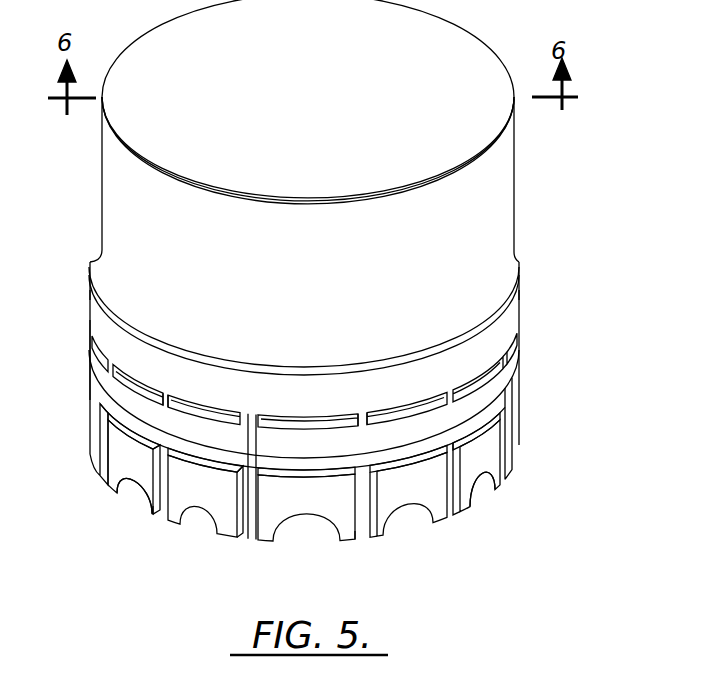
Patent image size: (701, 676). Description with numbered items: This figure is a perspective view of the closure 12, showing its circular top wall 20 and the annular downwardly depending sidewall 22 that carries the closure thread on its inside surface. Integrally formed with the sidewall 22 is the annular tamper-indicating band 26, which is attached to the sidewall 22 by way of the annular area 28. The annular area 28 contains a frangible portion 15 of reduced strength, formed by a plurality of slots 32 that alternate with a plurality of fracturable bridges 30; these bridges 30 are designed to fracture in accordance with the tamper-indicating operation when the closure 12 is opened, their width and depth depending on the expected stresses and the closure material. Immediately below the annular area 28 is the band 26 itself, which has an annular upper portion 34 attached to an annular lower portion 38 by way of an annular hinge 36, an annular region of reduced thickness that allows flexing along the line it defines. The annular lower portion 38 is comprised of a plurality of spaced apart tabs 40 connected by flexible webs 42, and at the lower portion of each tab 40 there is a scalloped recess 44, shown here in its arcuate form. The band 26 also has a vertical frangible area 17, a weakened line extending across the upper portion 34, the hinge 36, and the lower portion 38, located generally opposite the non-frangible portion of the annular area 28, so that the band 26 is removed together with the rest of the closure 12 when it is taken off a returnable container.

The closure 12 is at (572, 147).
The top wall 20 is at (323, 97).
The annular sidewall 22 is at (487, 243).
The annular area 28 is at (543, 318).
The annular tamper-indicating band 26 is at (545, 343).
The frangible portion 15 is at (500, 374).
The slots 32 is at (197, 405).
The fracturable bridges 30 is at (166, 396).
The annular upper portion 34 is at (133, 392).
The annular lower portion 38 is at (553, 402).
The annular hinge 36 is at (497, 430).
The tabs 40 is at (407, 495).
The flexible webs 42 is at (153, 510).
The scalloped recess 44 is at (140, 497).
The vertical frangible area 17 is at (238, 512).